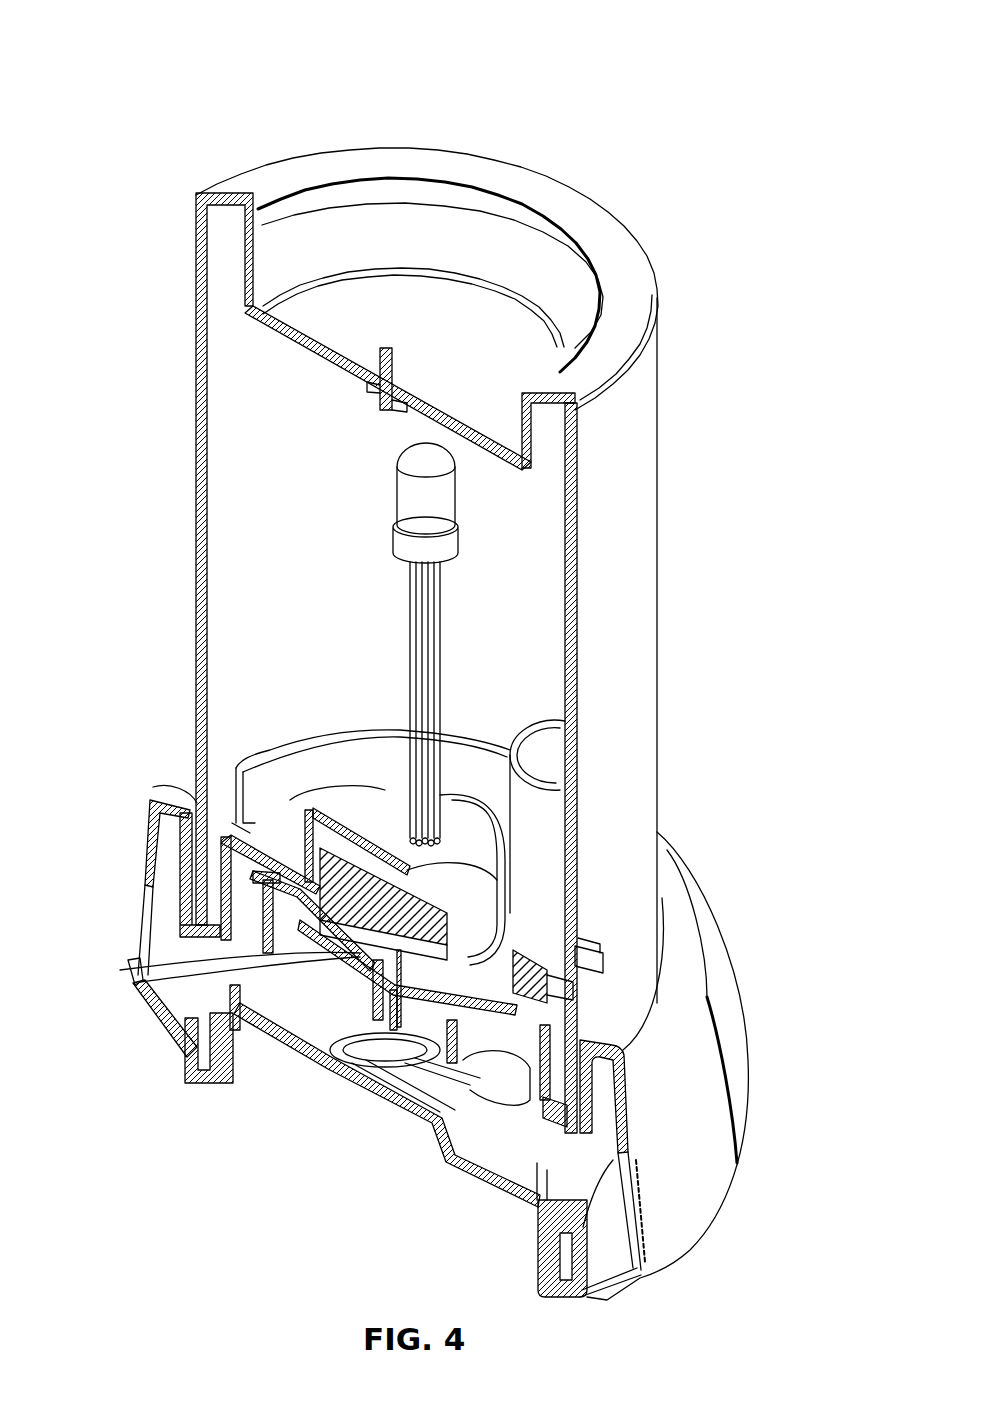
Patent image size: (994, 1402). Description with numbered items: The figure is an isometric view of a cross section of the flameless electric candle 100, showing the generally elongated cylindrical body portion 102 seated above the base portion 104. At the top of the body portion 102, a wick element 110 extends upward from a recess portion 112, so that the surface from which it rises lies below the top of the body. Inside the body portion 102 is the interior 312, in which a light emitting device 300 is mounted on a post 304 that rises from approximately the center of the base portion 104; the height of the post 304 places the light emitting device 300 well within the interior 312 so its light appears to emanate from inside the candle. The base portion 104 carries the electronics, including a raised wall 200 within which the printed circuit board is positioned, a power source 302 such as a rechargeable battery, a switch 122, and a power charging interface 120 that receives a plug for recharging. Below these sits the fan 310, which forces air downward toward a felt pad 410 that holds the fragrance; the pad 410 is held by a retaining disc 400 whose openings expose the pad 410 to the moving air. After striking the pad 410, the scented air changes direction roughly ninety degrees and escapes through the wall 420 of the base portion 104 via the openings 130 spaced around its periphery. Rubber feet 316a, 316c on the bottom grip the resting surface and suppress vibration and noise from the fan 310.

The flameless electric candle 100 is at (712, 78).
The body portion 102 is at (657, 537).
The base portion 104 is at (740, 1053).
The wick element 110 is at (398, 366).
The recess portion 112 is at (308, 232).
The power charging interface 120 is at (572, 1005).
The switch 122 is at (597, 962).
The openings 130 is at (755, 1115).
The raised wall 200 is at (272, 778).
The light emitting device 300 is at (403, 502).
The power source 302 is at (553, 842).
The post 304 is at (417, 603).
The fan 310 is at (300, 940).
The interior 312 is at (243, 433).
The rubber foot 316a is at (205, 1085).
The rubber foot 316c is at (580, 1300).
The retaining disc 400 is at (138, 985).
The pad 410 is at (183, 1043).
The wall 420 is at (683, 1223).